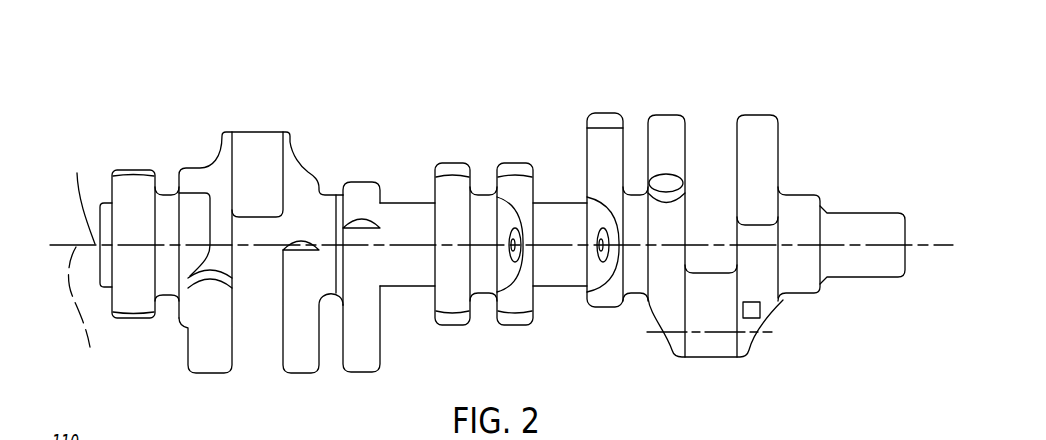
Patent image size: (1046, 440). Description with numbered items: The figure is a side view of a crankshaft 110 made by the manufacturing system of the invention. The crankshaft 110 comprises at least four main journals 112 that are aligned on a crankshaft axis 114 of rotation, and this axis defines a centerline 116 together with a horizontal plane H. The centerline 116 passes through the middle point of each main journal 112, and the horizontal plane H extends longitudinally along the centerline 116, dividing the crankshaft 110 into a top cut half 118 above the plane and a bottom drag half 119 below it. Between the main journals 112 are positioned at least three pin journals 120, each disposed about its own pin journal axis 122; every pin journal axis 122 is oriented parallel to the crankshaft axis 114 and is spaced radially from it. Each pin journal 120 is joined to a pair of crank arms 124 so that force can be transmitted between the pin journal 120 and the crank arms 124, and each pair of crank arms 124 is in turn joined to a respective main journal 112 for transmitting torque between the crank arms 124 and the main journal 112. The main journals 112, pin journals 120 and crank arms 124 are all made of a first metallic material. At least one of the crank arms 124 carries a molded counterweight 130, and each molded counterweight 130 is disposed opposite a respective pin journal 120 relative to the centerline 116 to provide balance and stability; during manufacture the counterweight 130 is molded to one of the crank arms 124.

The crankshaft 110 is at (191, 61).
The main journal 112 is at (393, 197).
The crankshaft axis 114 is at (942, 346).
The centerline 116 is at (912, 244).
The top cut half 118 is at (407, 201).
The bottom drag half 119 is at (398, 287).
The pin journal 120 is at (247, 132).
The pin journal axis 122 is at (765, 333).
The crank arm 124 is at (597, 307).
The molded counterweight 130 is at (603, 112).